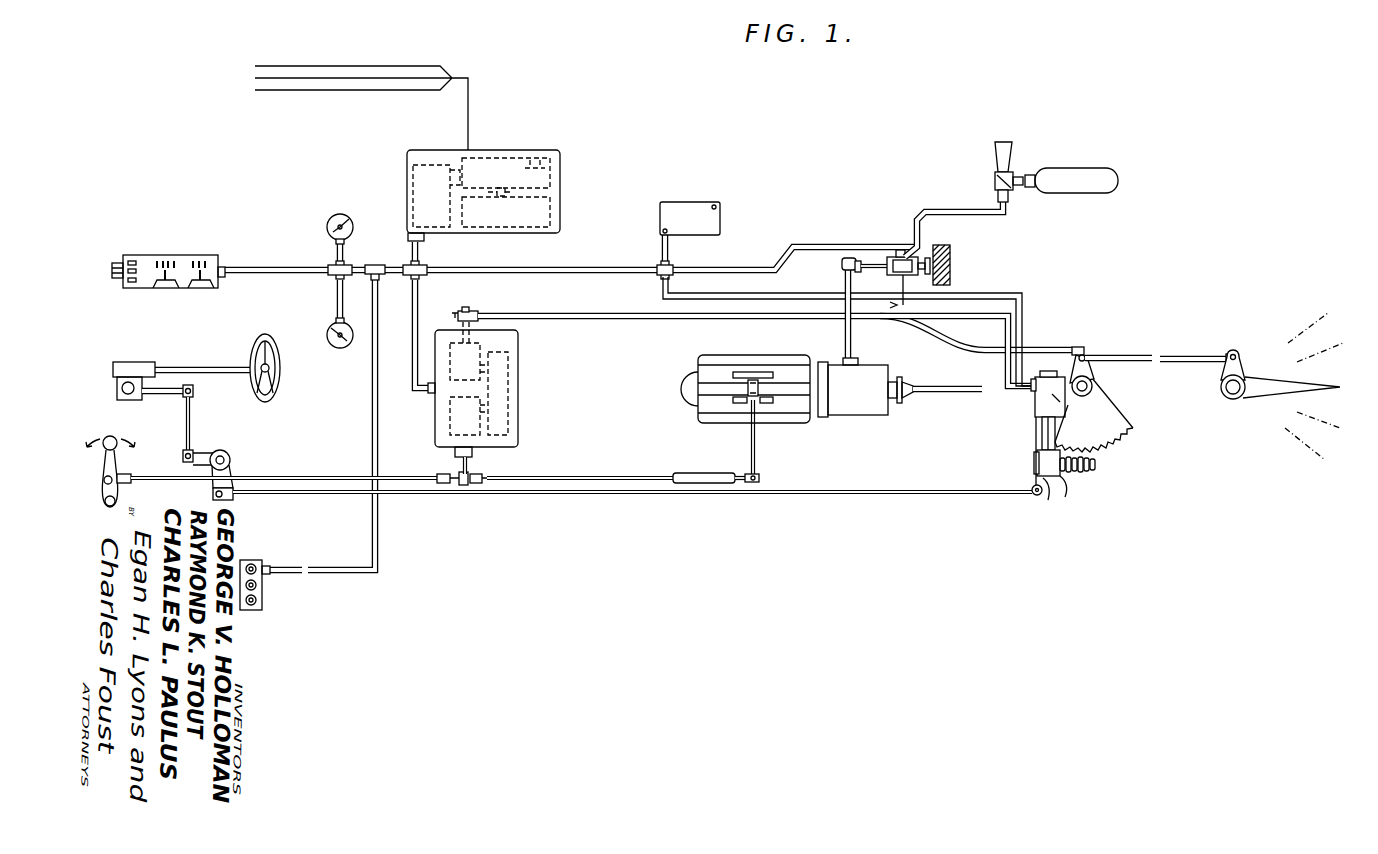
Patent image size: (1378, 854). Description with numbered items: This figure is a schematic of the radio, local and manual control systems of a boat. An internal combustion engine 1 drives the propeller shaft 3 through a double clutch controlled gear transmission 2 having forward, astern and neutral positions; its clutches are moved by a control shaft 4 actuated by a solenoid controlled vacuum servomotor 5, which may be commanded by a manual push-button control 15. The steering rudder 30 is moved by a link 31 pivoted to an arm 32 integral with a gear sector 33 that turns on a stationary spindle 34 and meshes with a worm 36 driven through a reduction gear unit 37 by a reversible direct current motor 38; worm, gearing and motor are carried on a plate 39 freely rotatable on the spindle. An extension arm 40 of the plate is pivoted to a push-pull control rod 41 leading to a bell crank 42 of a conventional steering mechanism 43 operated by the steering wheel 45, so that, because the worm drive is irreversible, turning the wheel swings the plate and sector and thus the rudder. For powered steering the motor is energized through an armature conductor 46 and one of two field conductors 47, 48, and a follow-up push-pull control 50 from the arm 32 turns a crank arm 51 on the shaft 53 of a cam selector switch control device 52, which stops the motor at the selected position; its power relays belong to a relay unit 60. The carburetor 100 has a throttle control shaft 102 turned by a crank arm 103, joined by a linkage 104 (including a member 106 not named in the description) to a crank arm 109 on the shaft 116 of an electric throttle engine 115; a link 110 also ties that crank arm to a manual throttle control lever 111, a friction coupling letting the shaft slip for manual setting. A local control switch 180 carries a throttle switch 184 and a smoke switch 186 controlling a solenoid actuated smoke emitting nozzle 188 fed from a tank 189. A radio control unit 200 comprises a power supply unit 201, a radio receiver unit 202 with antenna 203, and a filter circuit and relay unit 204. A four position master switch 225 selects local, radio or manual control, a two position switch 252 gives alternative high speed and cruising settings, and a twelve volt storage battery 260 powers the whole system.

The internal combustion engine 1 is at (795, 420).
The double clutch controlled gear transmission 2 is at (872, 413).
The propeller shaft 3 is at (953, 391).
The control shaft 4 is at (852, 358).
The vacuum clutch actuator servomotor 5 is at (918, 261).
The electric push-button control 15 is at (266, 603).
The steering rudder 30 is at (1267, 390).
The link 31 is at (1183, 358).
The arm 32 is at (1092, 366).
The gear sector 33 is at (1128, 418).
The stationary spindle 34 is at (1094, 386).
The worm 36 is at (1086, 470).
The reduction gear unit 37 is at (1052, 489).
The reversible split field direct current motor 38 is at (1056, 414).
The plate 39 is at (1060, 394).
The extension arm 40 is at (1040, 496).
The push-pull control rod 41 is at (308, 494).
The bell crank 42 is at (231, 461).
The steering mechanism 43 is at (129, 372).
The steering wheel 45 is at (270, 343).
The motor armature conductor 46 is at (1008, 318).
The field conductor 47 is at (1024, 304).
The field conductor 48 is at (1018, 324).
The follow-up push-pull control 50 is at (511, 311).
The crank arm 51 is at (458, 316).
The cam selector switch control device 52 is at (449, 350).
The shaft 53 is at (470, 310).
The relay unit 60 is at (506, 386).
The carburetor 100 is at (758, 383).
The throttle control shaft 102 is at (122, 263).
The crank arm 103 is at (760, 480).
The linkage 104 is at (630, 477).
The spring sleeve 106 is at (700, 476).
The crank arm 109 is at (464, 486).
The link 110 is at (346, 474).
The manual throttle control lever 111 is at (121, 483).
The throttle engine 115 is at (448, 428).
The shaft 116 is at (470, 462).
The local control switch 180 is at (190, 250).
The manually actuated switch 184 is at (170, 290).
The manual switch 186 is at (200, 290).
The solenoid actuated smoke emitting nozzle 188 is at (995, 180).
The tank 189 is at (1075, 164).
The radio control unit 200 is at (510, 156).
The power supply unit 201 is at (428, 158).
The radio receiver unit 202 is at (555, 158).
The antenna 203 is at (437, 62).
The filter circuit and relay unit 204 is at (545, 205).
The master switch 225 is at (334, 346).
The switch 252 is at (348, 207).
The storage battery 260 is at (697, 201).